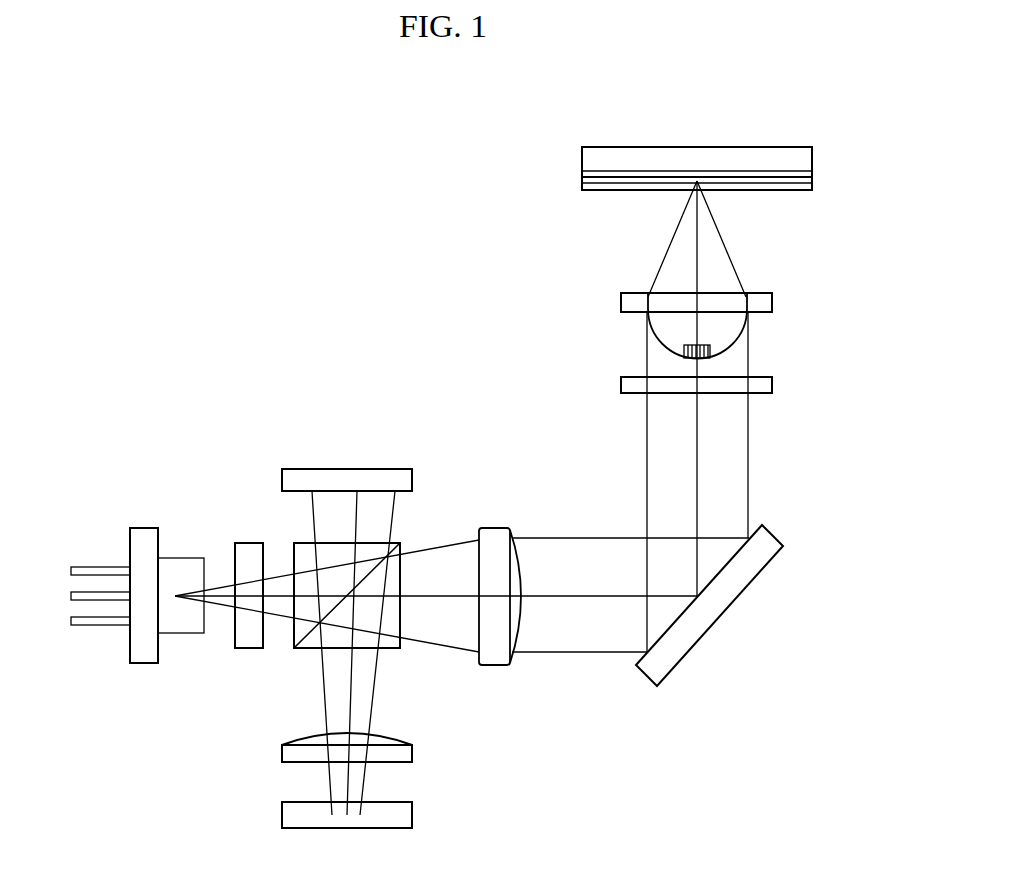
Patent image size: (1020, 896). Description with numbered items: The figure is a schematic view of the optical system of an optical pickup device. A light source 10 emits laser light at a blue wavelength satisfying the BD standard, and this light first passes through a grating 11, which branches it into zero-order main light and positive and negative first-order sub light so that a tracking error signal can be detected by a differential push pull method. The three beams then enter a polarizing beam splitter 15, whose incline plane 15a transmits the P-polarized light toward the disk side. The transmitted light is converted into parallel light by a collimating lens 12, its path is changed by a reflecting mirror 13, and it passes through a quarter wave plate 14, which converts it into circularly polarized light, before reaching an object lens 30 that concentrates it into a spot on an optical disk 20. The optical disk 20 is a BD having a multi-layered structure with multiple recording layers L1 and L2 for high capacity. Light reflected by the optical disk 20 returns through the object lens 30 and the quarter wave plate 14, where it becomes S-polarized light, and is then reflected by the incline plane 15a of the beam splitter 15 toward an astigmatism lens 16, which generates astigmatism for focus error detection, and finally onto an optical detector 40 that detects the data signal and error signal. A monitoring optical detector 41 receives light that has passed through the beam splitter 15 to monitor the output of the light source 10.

The light source 10 is at (143, 538).
The grating 11 is at (243, 640).
The collimating lens 12 is at (494, 666).
The reflecting mirror 13 is at (723, 618).
The quarter wave plate 14 is at (763, 386).
The beam splitter 15 is at (375, 543).
The incline plane 15a is at (371, 573).
The astigmatism lens 16 is at (412, 750).
The optical disk 20 is at (692, 147).
The object lens 30 is at (764, 296).
The optical detector 40 is at (412, 815).
The monitoring optical detector 41 is at (348, 469).
The recording layer L1 is at (582, 183).
The recording layer L2 is at (582, 173).